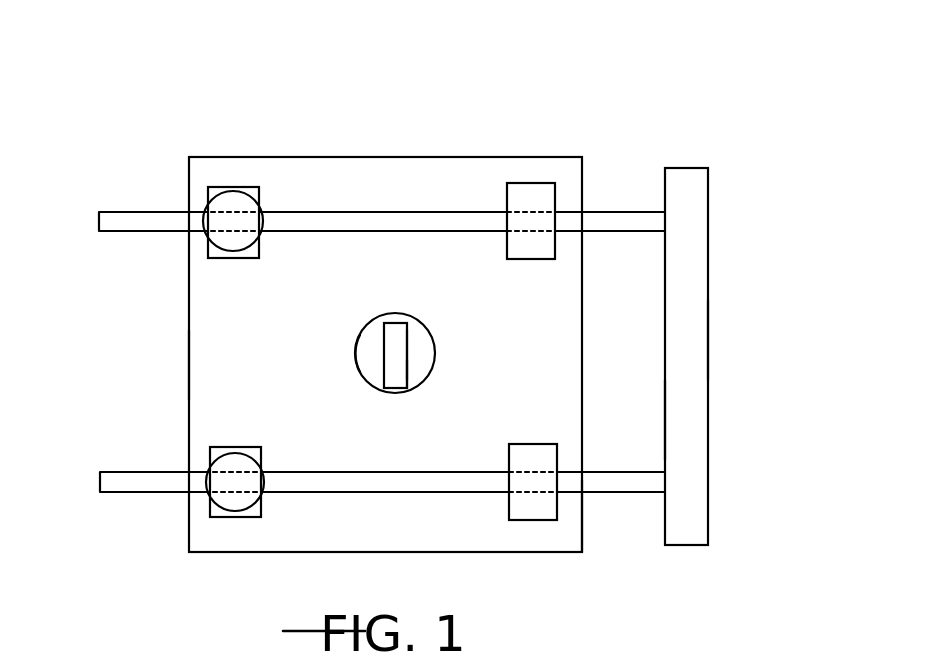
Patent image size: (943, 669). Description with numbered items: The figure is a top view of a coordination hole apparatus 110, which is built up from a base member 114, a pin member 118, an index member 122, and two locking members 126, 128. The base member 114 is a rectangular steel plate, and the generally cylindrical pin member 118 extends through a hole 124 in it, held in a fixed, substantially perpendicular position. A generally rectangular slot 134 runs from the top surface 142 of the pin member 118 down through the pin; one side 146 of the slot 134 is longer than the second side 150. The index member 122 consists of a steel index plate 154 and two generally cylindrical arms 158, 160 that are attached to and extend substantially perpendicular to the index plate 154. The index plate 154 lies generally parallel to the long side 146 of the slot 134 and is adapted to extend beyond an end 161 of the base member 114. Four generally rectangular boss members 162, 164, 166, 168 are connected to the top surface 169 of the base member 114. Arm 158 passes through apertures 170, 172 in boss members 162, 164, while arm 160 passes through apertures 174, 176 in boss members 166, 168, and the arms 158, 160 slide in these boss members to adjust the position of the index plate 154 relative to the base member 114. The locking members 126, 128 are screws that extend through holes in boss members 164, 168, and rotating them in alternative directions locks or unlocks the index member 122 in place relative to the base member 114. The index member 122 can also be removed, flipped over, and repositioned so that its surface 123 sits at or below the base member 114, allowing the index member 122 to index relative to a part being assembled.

The coordination hole apparatus 110 is at (560, 105).
The base member 114 is at (368, 157).
The pin member 118 is at (368, 382).
The index member 122 is at (706, 248).
The surface 123 is at (688, 420).
The hole 124 is at (377, 322).
The locking member 126 is at (224, 200).
The locking member 128 is at (230, 462).
The generally rectangular slot 134 is at (410, 388).
The top surface 142 is at (357, 348).
The side 146 is at (407, 350).
The second side 150 is at (395, 389).
The index plate 154 is at (708, 337).
The arm 158 is at (622, 233).
The arm 160 is at (610, 470).
The end 161 is at (585, 508).
The boss member 162 is at (540, 183).
The boss member 164 is at (220, 187).
The boss member 166 is at (532, 520).
The boss member 168 is at (250, 519).
The top surface 169 is at (210, 368).
The aperture 170 is at (525, 210).
The aperture 172 is at (228, 234).
The aperture 174 is at (531, 470).
The aperture 176 is at (222, 494).